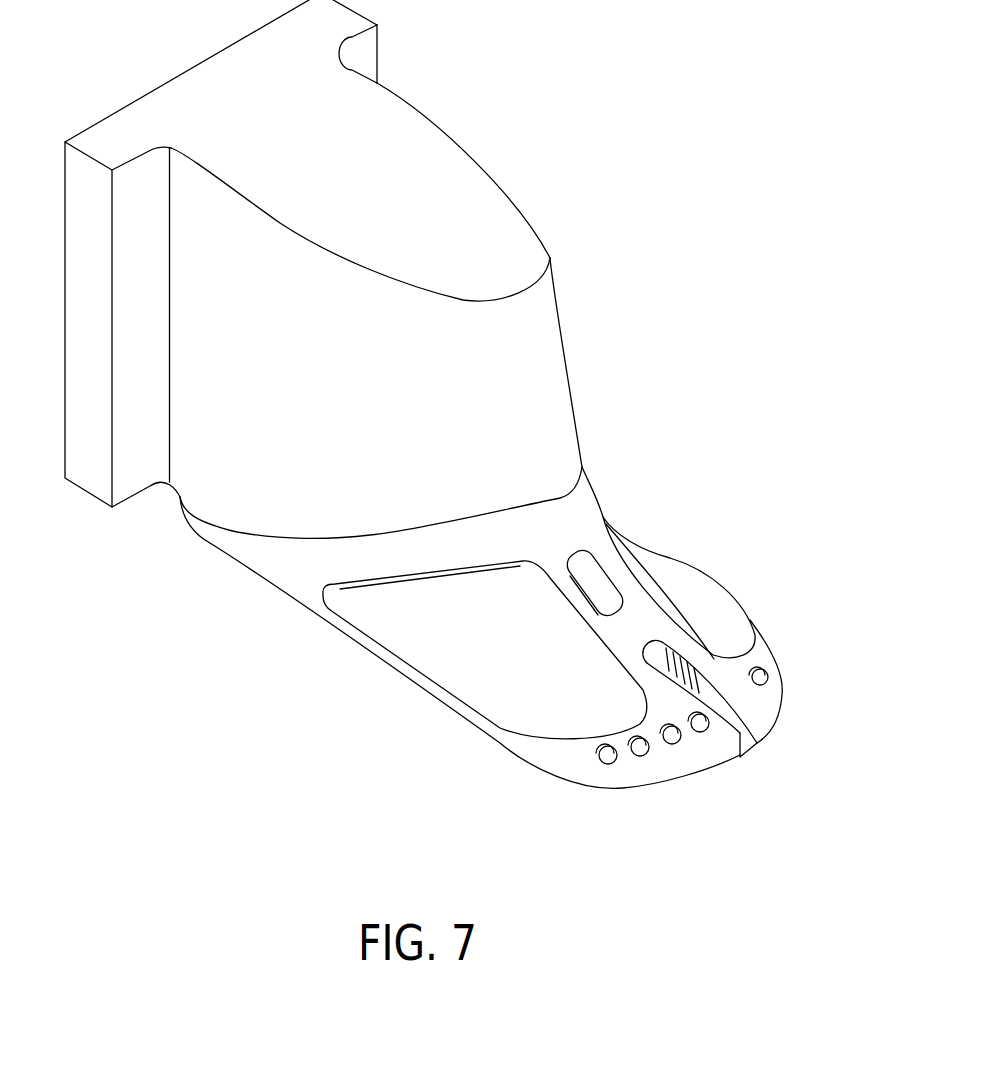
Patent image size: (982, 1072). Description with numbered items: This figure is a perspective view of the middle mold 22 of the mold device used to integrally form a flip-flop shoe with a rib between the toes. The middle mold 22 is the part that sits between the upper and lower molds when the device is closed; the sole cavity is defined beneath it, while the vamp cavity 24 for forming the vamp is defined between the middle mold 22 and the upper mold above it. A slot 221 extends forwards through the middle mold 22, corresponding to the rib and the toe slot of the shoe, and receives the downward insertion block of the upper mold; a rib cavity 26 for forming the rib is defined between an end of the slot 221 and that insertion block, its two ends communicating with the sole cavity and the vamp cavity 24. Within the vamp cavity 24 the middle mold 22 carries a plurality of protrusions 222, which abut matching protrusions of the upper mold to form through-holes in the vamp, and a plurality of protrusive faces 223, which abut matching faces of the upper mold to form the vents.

The middle mold 22 is at (542, 357).
The vamp cavity 24 is at (553, 520).
The protrusive faces 223 is at (663, 575).
The slot 221 is at (732, 710).
The rib cavity 26 is at (664, 660).
The protrusions 222 is at (762, 669).